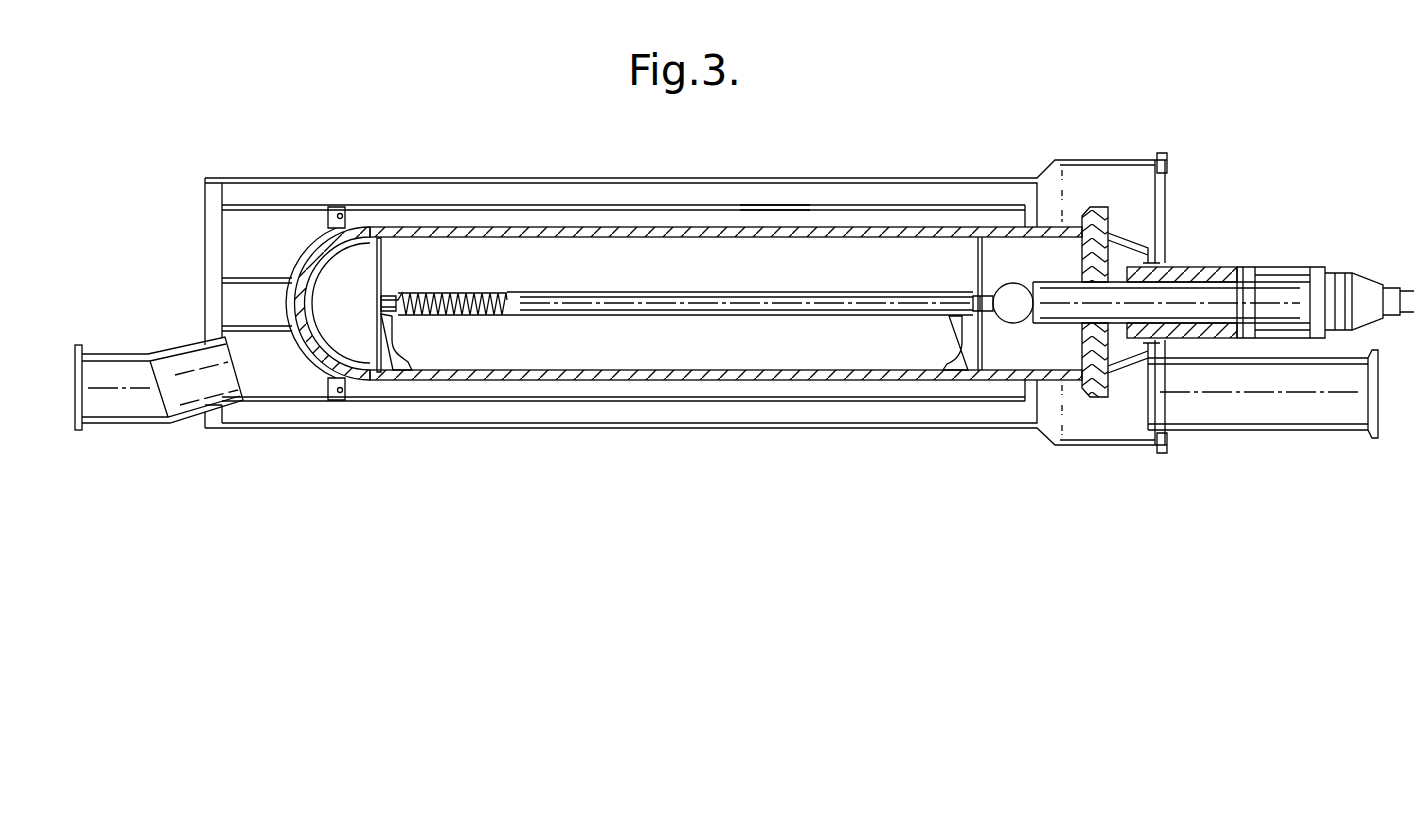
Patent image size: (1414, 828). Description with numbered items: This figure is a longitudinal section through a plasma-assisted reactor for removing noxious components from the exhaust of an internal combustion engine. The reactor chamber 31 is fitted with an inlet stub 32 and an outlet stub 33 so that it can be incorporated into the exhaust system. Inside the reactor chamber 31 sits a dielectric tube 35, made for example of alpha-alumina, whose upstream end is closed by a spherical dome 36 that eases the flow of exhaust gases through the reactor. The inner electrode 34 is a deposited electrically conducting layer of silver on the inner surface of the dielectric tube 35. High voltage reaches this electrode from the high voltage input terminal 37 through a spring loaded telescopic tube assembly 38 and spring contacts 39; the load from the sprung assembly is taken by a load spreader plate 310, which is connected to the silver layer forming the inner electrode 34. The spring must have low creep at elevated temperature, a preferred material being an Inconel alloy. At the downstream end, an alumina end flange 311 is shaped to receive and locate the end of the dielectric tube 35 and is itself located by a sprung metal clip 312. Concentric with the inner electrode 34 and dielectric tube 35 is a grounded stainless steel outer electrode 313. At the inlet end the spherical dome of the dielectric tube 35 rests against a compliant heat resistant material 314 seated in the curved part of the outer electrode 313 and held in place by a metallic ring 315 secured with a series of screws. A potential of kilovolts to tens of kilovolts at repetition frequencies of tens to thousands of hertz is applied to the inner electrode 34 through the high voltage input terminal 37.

The reactor chamber 31 is at (828, 180).
The inlet stub 32 is at (103, 419).
The outlet stub 33 is at (1243, 436).
The inner electrode 34 is at (652, 243).
The dielectric tube 35 is at (533, 228).
The spherical dome 36 is at (313, 290).
The high voltage input terminal 37 is at (1367, 277).
The spring loaded telescopic tube assembly 38 is at (893, 297).
The spring contacts 39 is at (413, 358).
The load spreader plate 310 is at (388, 240).
The alumina end flange 311 is at (1087, 210).
The sprung metal clip 312 is at (1133, 240).
The outer electrode 313 is at (772, 205).
The compliant heat resistant material 314 is at (342, 400).
The metallic ring 315 is at (343, 226).